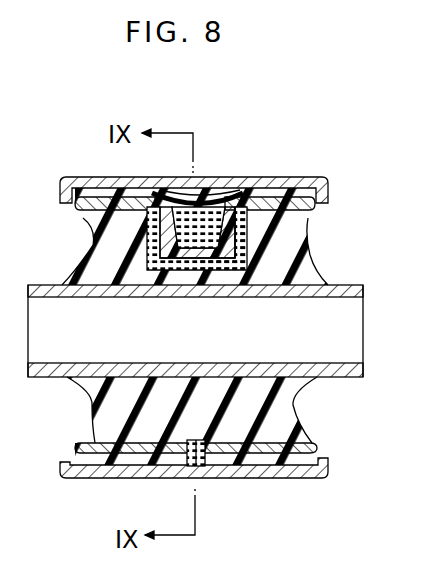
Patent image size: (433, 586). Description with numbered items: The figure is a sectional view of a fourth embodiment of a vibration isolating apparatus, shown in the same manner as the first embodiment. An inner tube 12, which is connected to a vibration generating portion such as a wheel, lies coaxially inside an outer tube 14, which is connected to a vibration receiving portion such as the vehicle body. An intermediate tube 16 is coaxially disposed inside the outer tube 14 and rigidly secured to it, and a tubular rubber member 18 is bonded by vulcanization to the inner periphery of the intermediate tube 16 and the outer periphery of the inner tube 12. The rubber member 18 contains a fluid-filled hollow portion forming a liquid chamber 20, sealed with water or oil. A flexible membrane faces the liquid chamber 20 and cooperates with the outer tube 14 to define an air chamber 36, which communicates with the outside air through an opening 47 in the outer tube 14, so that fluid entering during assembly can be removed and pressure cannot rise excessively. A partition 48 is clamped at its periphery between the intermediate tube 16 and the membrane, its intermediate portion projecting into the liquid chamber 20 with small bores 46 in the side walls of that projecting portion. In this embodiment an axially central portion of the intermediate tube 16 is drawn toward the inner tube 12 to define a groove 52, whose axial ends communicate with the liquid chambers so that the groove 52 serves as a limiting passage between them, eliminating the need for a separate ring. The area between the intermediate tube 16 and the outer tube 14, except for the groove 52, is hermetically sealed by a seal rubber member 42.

The inner tube 12 is at (348, 284).
The outer tube 14 is at (153, 177).
The intermediate tube 16 is at (300, 227).
The tubular rubber member 18 is at (277, 418).
The liquid chamber 20 is at (240, 243).
The air chamber 36 is at (228, 190).
The seal rubber member 42 is at (272, 462).
The small bores 46 is at (185, 229).
The opening 47 is at (190, 190).
The partition 48 is at (150, 252).
The groove 52 is at (203, 466).